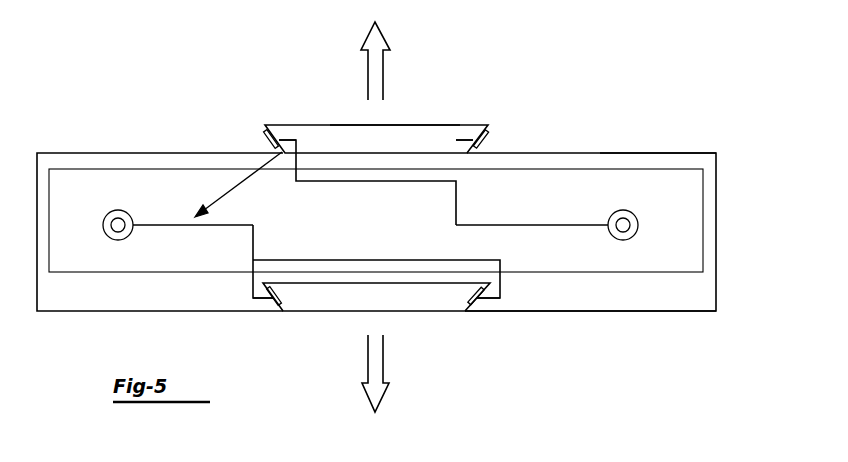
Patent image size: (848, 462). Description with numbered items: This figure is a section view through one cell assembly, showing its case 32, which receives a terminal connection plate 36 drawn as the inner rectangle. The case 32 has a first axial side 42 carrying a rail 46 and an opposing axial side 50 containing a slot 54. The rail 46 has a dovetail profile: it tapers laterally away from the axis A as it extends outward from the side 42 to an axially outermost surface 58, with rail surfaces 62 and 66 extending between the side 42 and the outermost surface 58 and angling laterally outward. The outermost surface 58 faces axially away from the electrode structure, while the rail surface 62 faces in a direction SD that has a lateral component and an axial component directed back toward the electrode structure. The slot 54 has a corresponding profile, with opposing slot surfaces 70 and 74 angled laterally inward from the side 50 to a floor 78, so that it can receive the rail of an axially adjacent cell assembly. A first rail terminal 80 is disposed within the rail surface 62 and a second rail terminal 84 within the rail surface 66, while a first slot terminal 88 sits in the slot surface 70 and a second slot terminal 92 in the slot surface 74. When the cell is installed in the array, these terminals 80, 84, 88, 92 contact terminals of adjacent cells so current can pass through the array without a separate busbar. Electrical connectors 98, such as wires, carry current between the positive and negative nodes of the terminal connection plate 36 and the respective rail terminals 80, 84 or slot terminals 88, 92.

The case 32 is at (716, 297).
The terminal connection plate 36 is at (703, 222).
The first axial side 42 is at (672, 153).
The rail 46 is at (327, 125).
The opposing axial side 50 is at (613, 311).
The slot 54 is at (340, 349).
The axially outermost surface 58 is at (388, 125).
The rail surface 62 is at (268, 131).
The rail surface 66 is at (482, 131).
The slot surface 70 is at (285, 309).
The slot surface 74 is at (463, 309).
The floor 78 is at (378, 283).
The first rail terminal 80 is at (270, 141).
The second rail terminal 84 is at (473, 145).
The first slot terminal 88 is at (280, 290).
The second slot terminal 92 is at (477, 290).
The electrical connectors 98 is at (179, 225).
The axis A is at (383, 72).
The direction SD is at (235, 180).